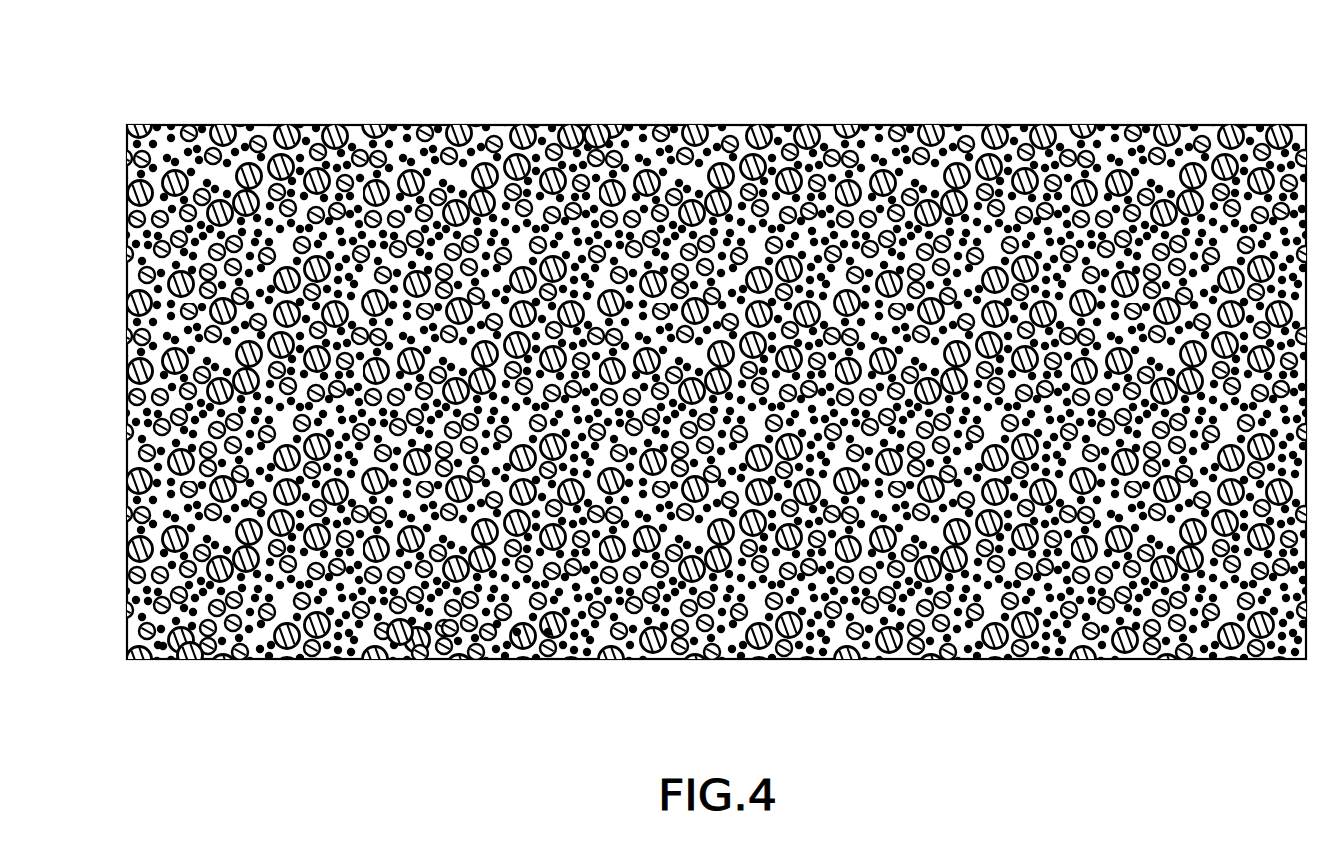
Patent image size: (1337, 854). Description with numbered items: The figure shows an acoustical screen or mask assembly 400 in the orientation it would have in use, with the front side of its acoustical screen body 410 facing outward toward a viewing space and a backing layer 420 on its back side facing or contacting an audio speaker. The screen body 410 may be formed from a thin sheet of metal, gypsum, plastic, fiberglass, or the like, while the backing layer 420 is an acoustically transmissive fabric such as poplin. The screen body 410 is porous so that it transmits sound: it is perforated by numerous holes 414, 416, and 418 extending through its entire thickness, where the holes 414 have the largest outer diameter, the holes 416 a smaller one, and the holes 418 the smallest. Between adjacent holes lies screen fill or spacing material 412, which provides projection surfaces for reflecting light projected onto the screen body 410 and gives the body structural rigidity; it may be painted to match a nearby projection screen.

The acoustical screen assembly 400 is at (190, 91).
The screen body 410 is at (137, 665).
The screen fill or spacing material 412 is at (163, 648).
The holes 414 is at (396, 638).
The holes 416 is at (488, 636).
The holes 418 is at (546, 637).
The backing layer 420 is at (598, 122).